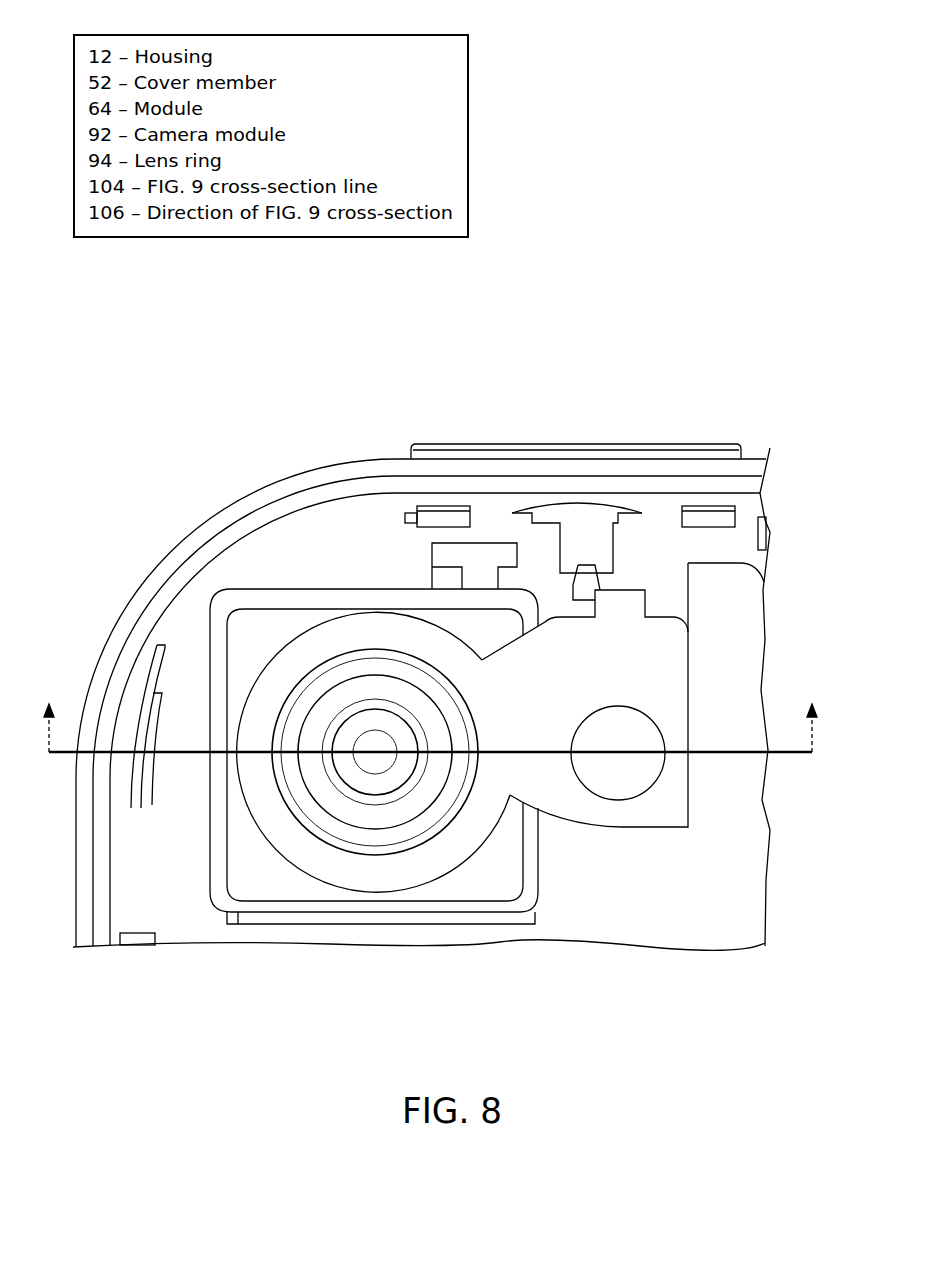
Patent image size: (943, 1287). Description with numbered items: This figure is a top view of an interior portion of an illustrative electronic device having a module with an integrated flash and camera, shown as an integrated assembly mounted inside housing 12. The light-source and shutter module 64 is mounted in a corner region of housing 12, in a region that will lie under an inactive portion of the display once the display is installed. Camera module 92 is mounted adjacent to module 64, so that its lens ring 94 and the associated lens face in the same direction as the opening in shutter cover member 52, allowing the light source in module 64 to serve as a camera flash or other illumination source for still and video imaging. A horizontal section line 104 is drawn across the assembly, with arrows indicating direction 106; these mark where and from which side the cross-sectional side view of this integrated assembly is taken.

The housing 12 is at (227, 508).
The shutter cover member 52 is at (557, 622).
The module 64 is at (613, 848).
The camera module 92 is at (207, 921).
The lens ring 94 is at (378, 872).
The line 104 is at (68, 750).
The direction 106 is at (49, 740).